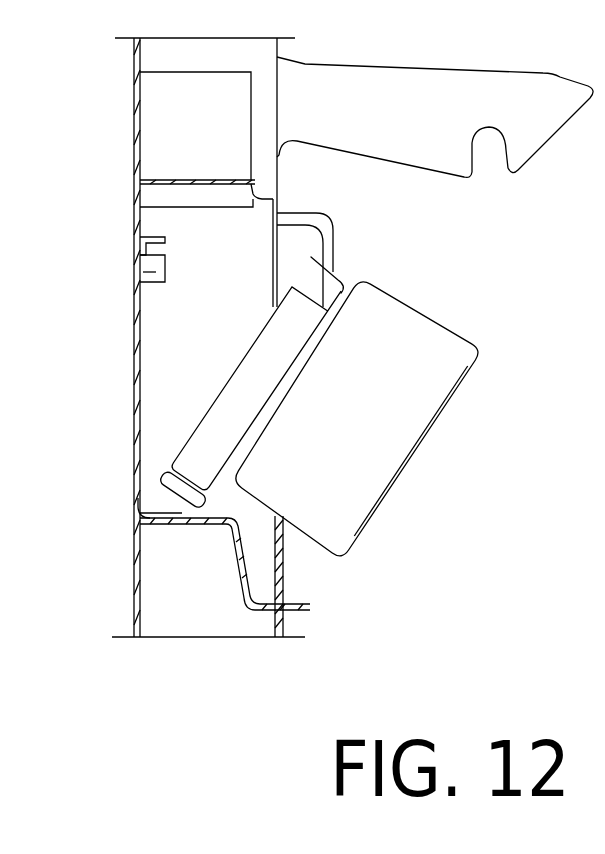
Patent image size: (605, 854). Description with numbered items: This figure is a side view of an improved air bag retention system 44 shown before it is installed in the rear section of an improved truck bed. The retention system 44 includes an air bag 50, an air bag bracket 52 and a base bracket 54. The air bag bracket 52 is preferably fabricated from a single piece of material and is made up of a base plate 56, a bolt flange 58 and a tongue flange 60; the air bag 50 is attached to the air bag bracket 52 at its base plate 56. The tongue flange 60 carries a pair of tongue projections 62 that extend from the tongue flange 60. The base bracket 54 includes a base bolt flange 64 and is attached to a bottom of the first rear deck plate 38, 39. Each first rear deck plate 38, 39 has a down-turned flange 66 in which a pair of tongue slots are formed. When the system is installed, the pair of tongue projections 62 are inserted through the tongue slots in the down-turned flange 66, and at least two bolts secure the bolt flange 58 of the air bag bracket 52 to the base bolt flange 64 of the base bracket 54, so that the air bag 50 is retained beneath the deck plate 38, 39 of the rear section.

The first rear deck plate 38 is at (71, 337).
The first rear deck plate 39 is at (133, 100).
The base bolt flange 64 is at (150, 237).
The base bracket 54 is at (150, 267).
The air bag bracket 52 is at (228, 395).
The tongue projections 62 is at (147, 493).
The down-turned flange 66 is at (140, 528).
The tongue flange 60 is at (163, 480).
The base plate 56 is at (258, 520).
The bolt flange 58 is at (336, 247).
The improved air bag retention system 44 is at (436, 272).
The air bag 50 is at (400, 450).